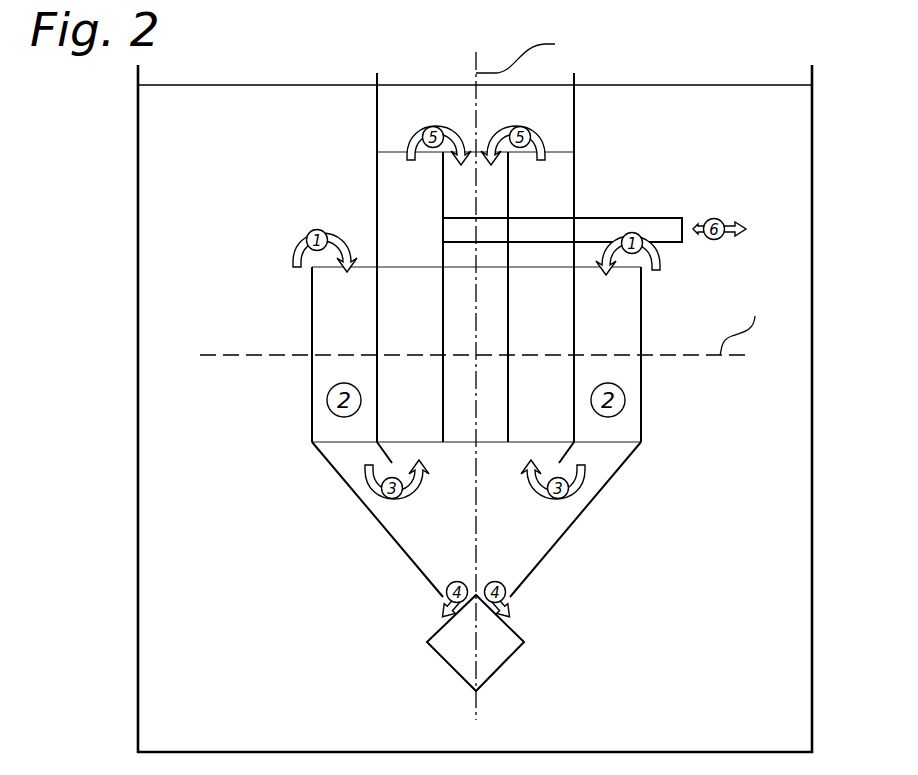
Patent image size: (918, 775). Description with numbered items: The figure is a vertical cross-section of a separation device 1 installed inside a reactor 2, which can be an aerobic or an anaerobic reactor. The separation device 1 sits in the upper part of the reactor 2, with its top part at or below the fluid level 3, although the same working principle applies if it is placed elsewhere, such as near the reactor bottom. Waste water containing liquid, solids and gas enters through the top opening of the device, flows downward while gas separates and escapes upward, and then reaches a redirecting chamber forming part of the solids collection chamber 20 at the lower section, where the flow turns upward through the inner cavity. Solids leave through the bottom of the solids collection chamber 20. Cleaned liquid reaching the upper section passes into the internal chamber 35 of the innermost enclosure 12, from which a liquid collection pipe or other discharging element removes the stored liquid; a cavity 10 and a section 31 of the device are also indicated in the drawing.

The separation device 1 is at (722, 458).
The reactor 2 is at (836, 126).
The fluid level 3 is at (215, 86).
The inner vessel 10 is at (664, 337).
The innermost enclosure 12 is at (443, 255).
The solids collection chamber 20 is at (602, 524).
The draft tube 31 is at (584, 168).
The internal chamber 35 is at (496, 272).